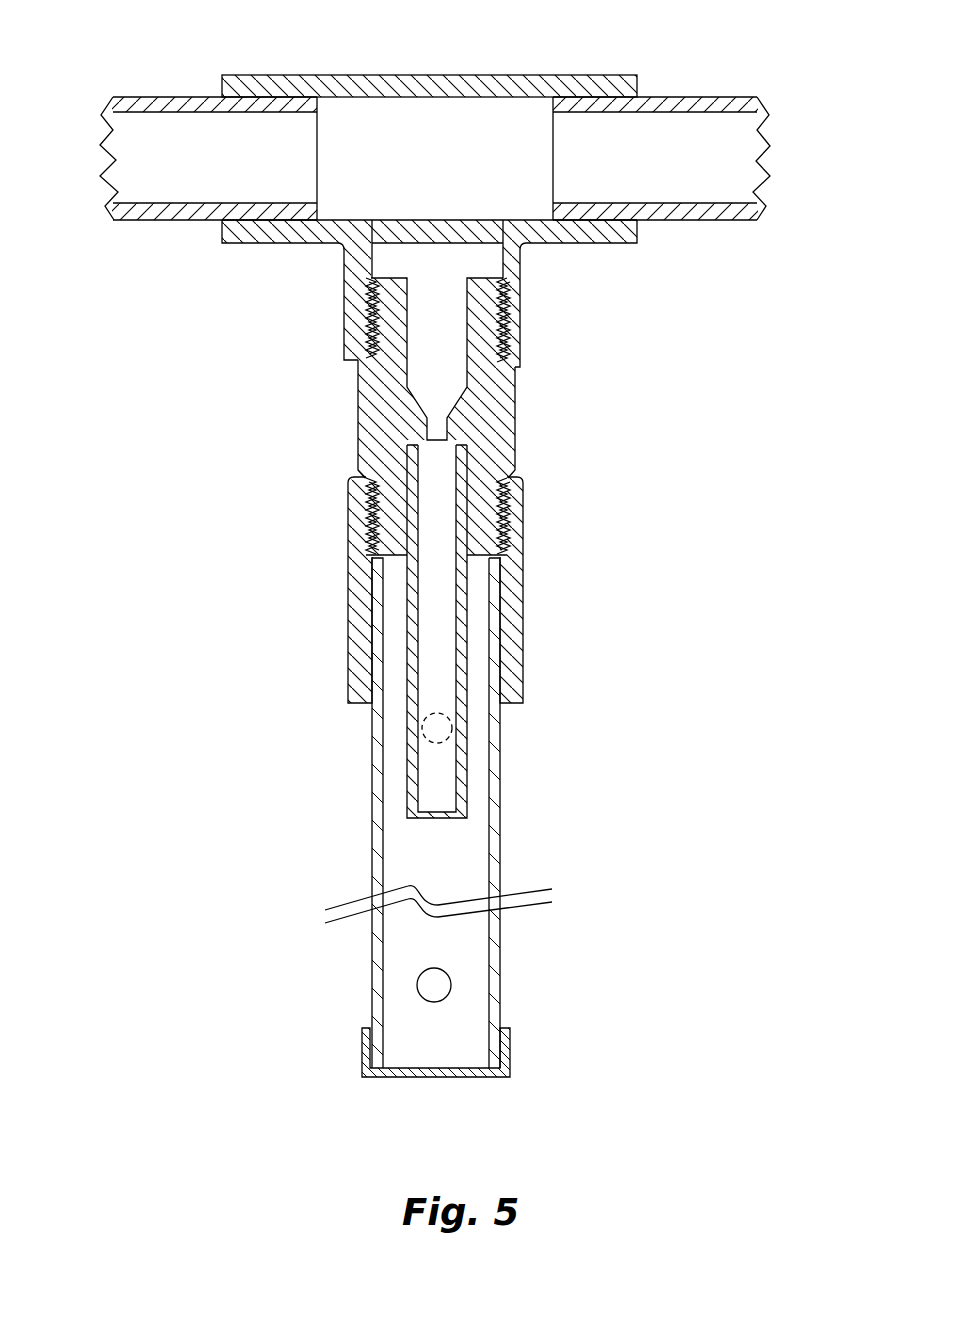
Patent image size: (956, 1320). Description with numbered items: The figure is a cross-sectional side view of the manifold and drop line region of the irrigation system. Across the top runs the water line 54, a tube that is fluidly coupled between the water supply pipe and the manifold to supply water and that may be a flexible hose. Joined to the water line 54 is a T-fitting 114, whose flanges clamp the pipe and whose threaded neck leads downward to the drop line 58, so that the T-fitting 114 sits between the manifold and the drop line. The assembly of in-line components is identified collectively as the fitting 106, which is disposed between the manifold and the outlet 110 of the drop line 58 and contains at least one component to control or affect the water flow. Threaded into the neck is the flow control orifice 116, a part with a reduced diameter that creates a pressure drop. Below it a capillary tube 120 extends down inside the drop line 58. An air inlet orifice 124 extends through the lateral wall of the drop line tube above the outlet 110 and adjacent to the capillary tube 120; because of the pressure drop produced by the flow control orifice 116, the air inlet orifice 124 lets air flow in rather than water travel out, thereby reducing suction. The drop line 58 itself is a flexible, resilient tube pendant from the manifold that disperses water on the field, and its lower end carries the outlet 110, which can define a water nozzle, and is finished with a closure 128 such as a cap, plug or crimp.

The water line 54 is at (165, 97).
The T-fitting 114 is at (470, 75).
The flow control orifice 116 is at (385, 418).
The air inlet orifice 124 is at (375, 733).
The capillary tube 120 is at (463, 601).
The drop line 58 is at (500, 828).
The outlet 110 is at (375, 987).
The closure 128 is at (478, 1070).
The fitting 106 is at (435, 561).